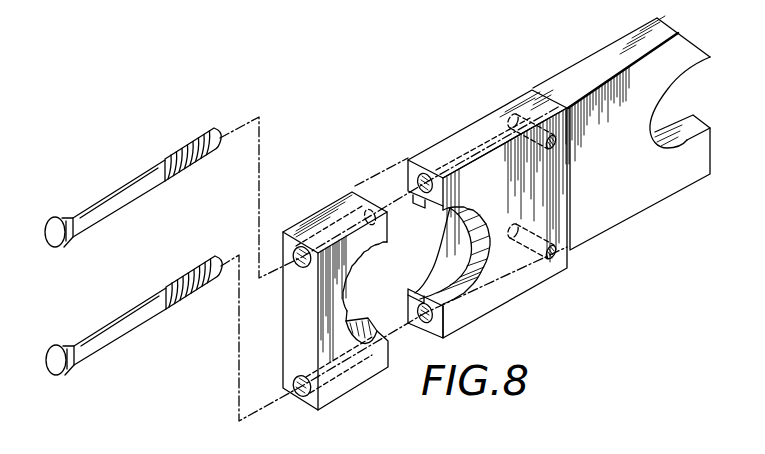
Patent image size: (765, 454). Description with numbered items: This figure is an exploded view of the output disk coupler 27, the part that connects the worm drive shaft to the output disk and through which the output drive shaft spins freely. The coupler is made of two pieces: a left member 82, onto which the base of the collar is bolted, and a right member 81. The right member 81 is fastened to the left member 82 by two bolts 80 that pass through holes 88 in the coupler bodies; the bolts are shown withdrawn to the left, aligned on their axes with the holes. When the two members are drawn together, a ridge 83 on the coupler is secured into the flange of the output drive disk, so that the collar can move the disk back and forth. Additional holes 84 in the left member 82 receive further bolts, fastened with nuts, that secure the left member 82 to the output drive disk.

The output disk coupler 27 is at (480, 97).
The bolts 80 is at (208, 265).
The right member 81 is at (333, 203).
The left member 82 is at (447, 143).
The ridge 83 is at (471, 256).
The holes 84 is at (557, 144).
The holes 88 is at (283, 387).